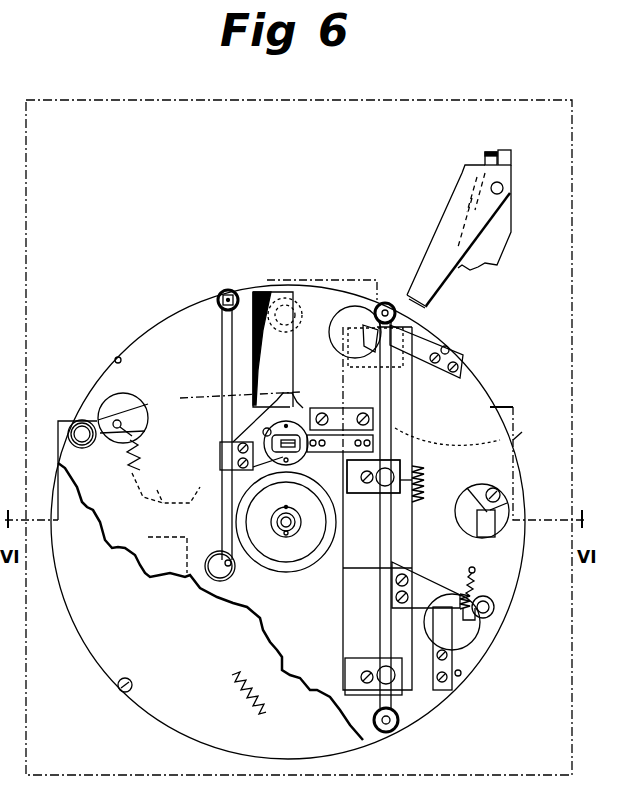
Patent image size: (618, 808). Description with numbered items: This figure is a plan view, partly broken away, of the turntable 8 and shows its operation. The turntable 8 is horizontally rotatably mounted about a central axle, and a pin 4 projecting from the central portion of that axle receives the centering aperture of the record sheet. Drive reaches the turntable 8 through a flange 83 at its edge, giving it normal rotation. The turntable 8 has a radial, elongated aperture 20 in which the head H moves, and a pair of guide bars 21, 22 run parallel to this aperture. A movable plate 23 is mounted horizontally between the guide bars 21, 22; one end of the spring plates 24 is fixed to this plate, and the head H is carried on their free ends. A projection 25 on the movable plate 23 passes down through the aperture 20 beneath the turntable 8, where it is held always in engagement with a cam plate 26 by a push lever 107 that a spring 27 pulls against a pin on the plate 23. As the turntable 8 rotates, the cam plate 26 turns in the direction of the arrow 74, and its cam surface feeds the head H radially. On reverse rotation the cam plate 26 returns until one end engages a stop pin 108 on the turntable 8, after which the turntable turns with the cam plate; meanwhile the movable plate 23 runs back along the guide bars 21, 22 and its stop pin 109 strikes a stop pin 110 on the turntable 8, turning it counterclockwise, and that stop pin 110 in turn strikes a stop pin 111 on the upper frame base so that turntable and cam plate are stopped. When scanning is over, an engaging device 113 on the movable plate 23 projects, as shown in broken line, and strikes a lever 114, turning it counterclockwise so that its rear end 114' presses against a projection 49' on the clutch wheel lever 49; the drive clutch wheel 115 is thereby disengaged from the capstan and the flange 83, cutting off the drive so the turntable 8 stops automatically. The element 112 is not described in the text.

The turntable 8 is at (163, 324).
The flange 83 is at (215, 298).
The radial aperture 20 is at (250, 342).
The guide bar 21 is at (221, 357).
The push lever 107 is at (198, 396).
The drive clutch wheel 115 is at (290, 272).
The engaging device 113 is at (328, 388).
The head H is at (310, 404).
The pin 4 is at (272, 523).
The projection 25 is at (222, 481).
The movable plate 23 is at (373, 476).
The guide bar 22 is at (395, 400).
The spring plates 24 is at (398, 432).
The stop pin 108 is at (465, 345).
The stop pin 109 is at (520, 600).
The stop pin 111 is at (500, 488).
The stop pin 110 is at (500, 568).
The bar 112 is at (458, 640).
The spring 27 is at (132, 473).
The cam plate 26 is at (210, 601).
The arrow 74 is at (310, 718).
The lever 114 is at (458, 236).
The projection 49' is at (501, 137).
The rear end 114' is at (536, 155).
The clutch wheel lever 49 is at (502, 217).